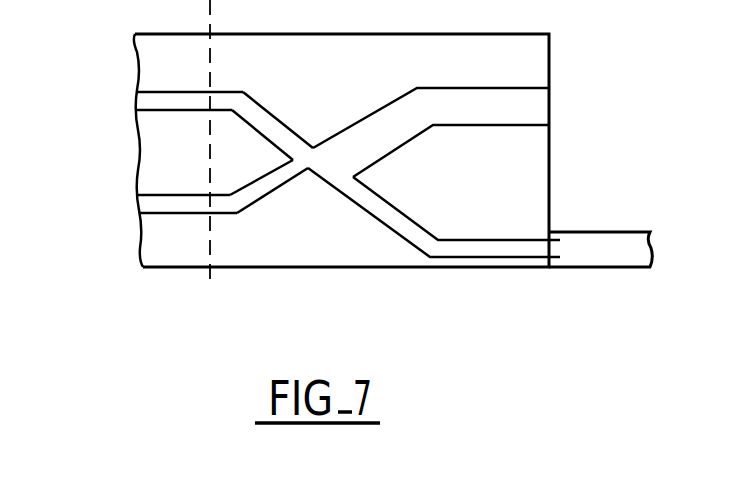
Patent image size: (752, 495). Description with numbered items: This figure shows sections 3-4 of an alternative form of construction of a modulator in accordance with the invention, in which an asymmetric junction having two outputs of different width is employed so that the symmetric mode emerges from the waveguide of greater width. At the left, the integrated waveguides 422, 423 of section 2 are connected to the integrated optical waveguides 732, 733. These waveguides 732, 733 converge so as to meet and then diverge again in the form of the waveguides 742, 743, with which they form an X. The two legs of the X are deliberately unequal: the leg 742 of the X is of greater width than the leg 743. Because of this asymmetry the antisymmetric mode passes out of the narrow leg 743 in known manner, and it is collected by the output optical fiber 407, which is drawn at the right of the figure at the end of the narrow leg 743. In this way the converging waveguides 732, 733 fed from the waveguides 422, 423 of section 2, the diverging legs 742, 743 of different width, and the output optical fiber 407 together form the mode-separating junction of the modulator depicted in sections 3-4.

The section 2 is at (108, 157).
The sections 3-4 is at (368, 274).
The integrated waveguide 422 is at (168, 110).
The integrated waveguide 423 is at (177, 200).
The integrated optical waveguide 732 is at (272, 128).
The integrated optical waveguide 733 is at (247, 197).
The leg of the X 742 is at (390, 127).
The leg of the X 743 is at (365, 197).
The output optical fiber 407 is at (602, 248).